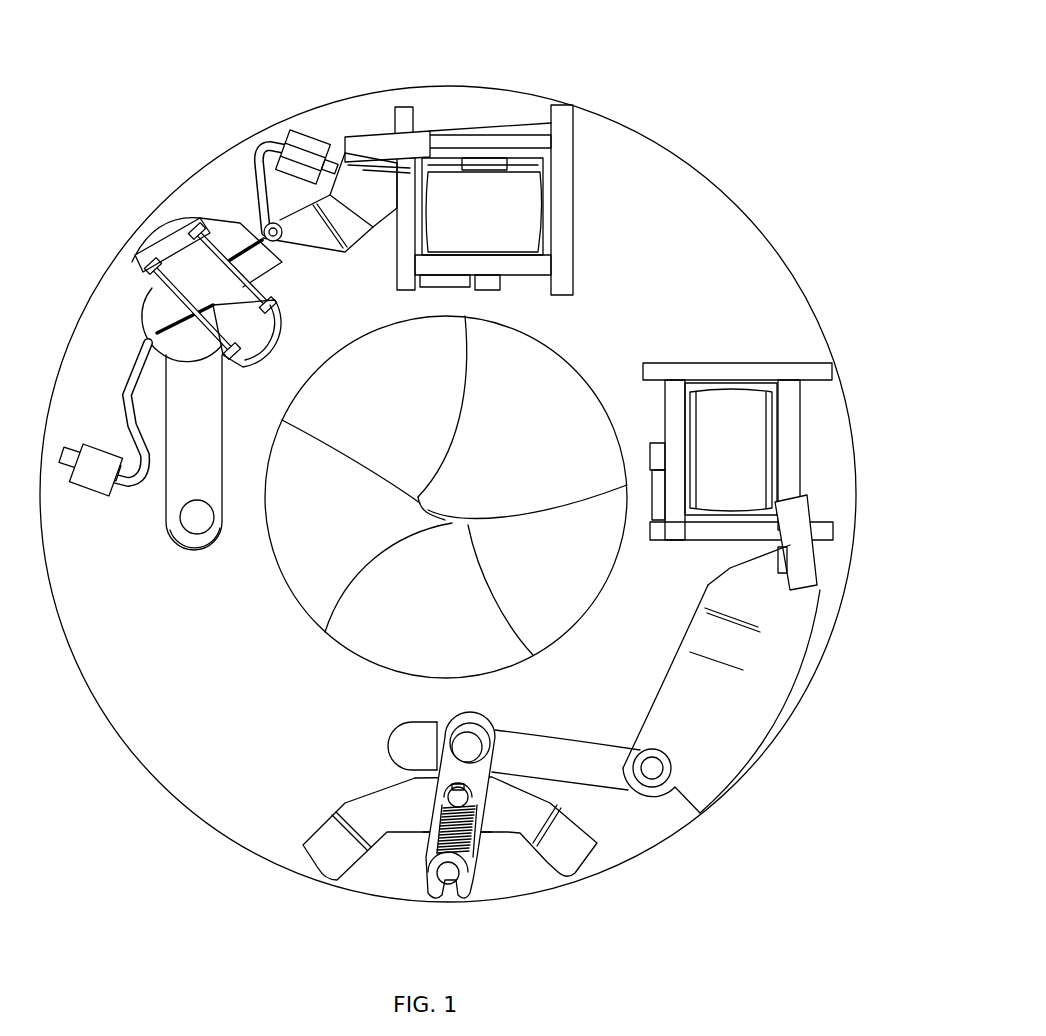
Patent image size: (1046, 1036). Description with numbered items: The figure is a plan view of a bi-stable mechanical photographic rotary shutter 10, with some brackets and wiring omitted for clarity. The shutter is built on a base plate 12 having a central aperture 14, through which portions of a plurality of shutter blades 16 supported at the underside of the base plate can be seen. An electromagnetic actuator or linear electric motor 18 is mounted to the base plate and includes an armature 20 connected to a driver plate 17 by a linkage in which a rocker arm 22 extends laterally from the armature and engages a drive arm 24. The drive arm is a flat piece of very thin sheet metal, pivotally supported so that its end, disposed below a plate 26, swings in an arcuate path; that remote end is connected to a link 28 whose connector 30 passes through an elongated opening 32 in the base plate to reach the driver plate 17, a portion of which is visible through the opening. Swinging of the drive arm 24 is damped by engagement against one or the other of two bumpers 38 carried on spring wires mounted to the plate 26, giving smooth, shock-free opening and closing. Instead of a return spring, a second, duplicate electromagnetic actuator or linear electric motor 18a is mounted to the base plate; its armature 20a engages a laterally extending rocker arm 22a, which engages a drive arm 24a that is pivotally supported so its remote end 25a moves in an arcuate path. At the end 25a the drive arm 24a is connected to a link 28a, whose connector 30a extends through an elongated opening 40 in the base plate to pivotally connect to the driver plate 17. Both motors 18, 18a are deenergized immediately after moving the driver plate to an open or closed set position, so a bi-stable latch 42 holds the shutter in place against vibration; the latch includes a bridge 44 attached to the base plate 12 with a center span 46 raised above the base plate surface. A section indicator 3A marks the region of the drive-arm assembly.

The rotary shutter 10 is at (663, 52).
The base plate 12 is at (733, 203).
The central aperture 14 is at (545, 346).
The shutter blades 16 is at (405, 388).
The driver plate 17 is at (198, 548).
The electromagnetic actuator or linear electric motor 18 is at (494, 217).
The second electromagnetic actuator or linear electric motor 18a is at (726, 457).
The armature 20 is at (476, 138).
The armature 20a is at (803, 458).
The rocker arm 22 is at (372, 150).
The rocker arm 22a is at (803, 577).
The drive arm 24 is at (326, 254).
The drive arm 24a is at (688, 666).
The end of drive arm 25a is at (668, 788).
The plate 26 is at (153, 300).
The link 28 is at (223, 394).
The link 28a is at (606, 710).
The connector 30 is at (197, 500).
The connector 30a is at (470, 745).
The elongated opening 32 is at (175, 534).
The bumpers 38 is at (157, 235).
The section view indicator 3A is at (174, 161).
The elongated opening 40 is at (410, 725).
The bi-stable latch 42 is at (410, 865).
The bridge 44 is at (305, 843).
The center span 46 is at (345, 803).